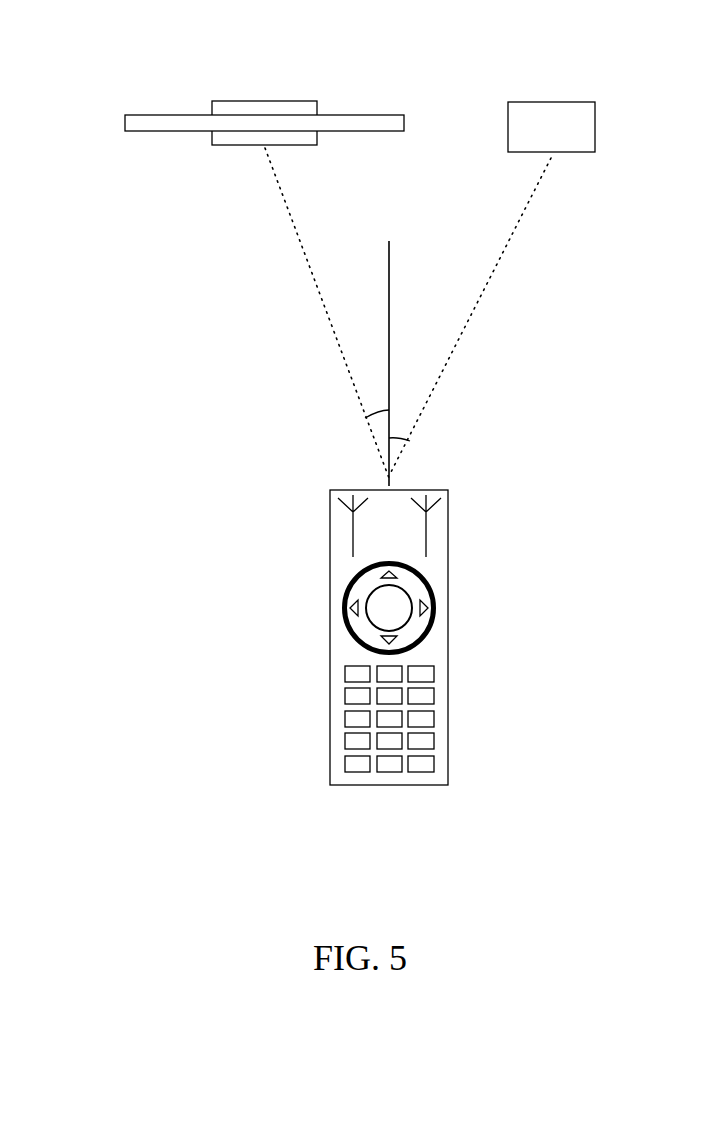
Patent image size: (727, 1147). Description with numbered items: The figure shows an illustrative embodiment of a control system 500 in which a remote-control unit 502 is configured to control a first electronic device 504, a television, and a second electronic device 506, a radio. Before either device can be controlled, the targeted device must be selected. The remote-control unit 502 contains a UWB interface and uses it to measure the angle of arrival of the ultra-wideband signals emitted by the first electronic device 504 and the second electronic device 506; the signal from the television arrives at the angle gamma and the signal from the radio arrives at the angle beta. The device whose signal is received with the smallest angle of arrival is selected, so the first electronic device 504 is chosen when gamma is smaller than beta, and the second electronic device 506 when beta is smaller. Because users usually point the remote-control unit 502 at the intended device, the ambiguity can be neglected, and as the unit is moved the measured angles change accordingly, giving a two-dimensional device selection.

The control system 500 is at (330, 414).
The remote-control unit 502 is at (330, 623).
The first electronic device 504 is at (178, 131).
The second electronic device 506 is at (575, 152).